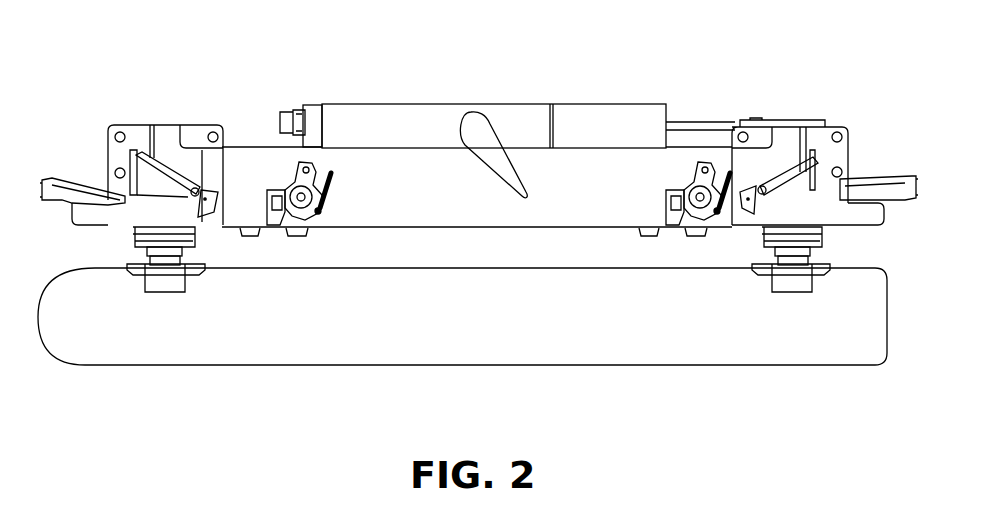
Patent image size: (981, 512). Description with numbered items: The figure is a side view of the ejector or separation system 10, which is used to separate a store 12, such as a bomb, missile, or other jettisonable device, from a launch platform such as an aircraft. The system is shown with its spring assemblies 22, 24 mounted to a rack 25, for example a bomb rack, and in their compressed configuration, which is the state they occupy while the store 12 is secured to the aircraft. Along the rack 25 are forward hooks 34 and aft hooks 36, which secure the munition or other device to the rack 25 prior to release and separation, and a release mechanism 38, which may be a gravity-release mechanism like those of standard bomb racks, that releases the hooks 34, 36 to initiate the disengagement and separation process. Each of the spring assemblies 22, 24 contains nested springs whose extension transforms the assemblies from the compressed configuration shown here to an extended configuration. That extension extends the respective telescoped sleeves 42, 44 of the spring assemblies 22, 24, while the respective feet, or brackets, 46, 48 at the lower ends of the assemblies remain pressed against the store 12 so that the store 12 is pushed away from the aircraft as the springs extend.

The separation system 10 is at (97, 98).
The store 12 is at (626, 338).
The spring assembly 22 is at (104, 238).
The spring assembly 24 is at (850, 240).
The rack 25 is at (248, 162).
The forward hooks 34 is at (281, 220).
The aft hooks 36 is at (684, 240).
The release mechanism 38 is at (473, 118).
The telescoped sleeve 42 is at (205, 237).
The telescoped sleeve 44 is at (753, 238).
The foot 46 is at (166, 280).
The foot 48 is at (790, 273).